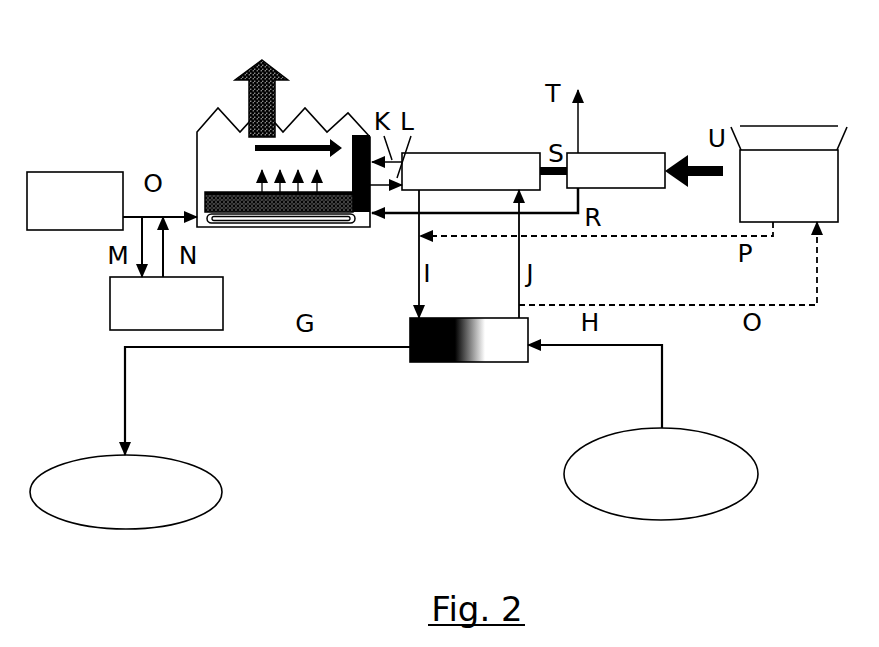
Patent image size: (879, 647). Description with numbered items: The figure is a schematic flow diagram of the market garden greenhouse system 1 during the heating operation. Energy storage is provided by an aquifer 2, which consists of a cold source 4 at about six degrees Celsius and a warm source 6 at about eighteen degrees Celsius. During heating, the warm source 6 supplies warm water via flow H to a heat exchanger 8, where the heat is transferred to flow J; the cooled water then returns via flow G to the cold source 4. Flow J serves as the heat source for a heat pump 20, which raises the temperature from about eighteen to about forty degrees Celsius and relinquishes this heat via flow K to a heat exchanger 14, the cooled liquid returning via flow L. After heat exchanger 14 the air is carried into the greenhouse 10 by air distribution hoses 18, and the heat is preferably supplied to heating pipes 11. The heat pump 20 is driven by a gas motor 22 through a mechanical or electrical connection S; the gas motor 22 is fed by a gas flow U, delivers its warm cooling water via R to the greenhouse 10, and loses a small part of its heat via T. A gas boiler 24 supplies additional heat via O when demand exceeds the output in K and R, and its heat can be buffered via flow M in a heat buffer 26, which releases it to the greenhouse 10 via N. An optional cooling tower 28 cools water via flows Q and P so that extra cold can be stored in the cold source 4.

The system 1 is at (122, 93).
The aquifer 2 is at (295, 473).
The cold source 4 is at (83, 475).
The warm source 6 is at (620, 450).
The heat exchanger 8 is at (480, 345).
The greenhouse 10 is at (345, 120).
The heating pipes 11 is at (317, 222).
The heat exchanger 14 is at (350, 148).
The air distribution hoses 18 is at (242, 203).
The heat pump 20 is at (495, 153).
The gas motor 22 is at (618, 163).
The gas boiler 24 is at (77, 193).
The heat buffer 26 is at (118, 302).
The cooling tower 28 is at (773, 170).